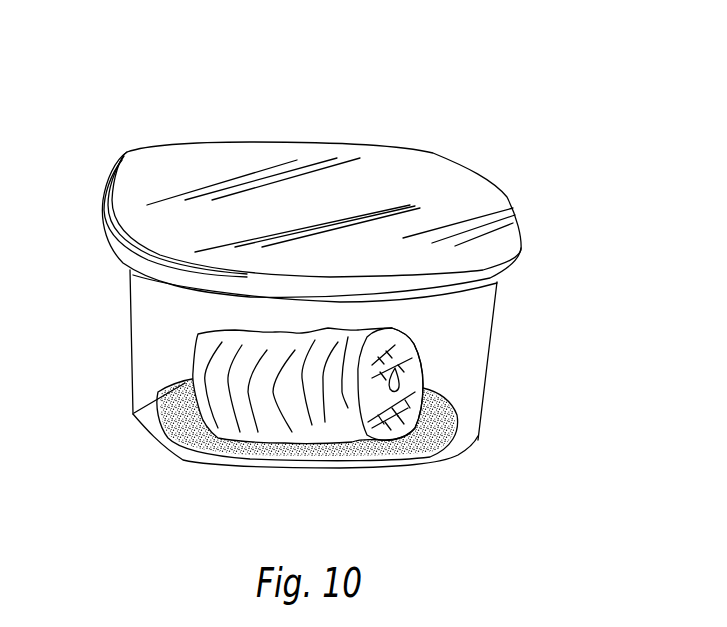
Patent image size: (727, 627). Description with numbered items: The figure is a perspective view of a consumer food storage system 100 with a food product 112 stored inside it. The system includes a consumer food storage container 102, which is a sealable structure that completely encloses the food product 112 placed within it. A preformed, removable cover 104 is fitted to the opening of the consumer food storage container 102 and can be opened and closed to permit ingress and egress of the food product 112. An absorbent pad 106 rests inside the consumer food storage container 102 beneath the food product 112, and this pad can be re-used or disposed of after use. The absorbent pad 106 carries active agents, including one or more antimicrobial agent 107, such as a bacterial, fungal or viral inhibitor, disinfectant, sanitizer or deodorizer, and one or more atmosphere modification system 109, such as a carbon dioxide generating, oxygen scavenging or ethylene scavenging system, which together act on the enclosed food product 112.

The consumer food storage system 100 is at (135, 111).
The consumer food storage container 102 is at (128, 318).
The removable cover 104 is at (523, 238).
The absorbent pad 106 is at (450, 438).
The antimicrobial agent 107 is at (433, 454).
The atmosphere modification system 109 is at (225, 458).
The food product 112 is at (413, 380).